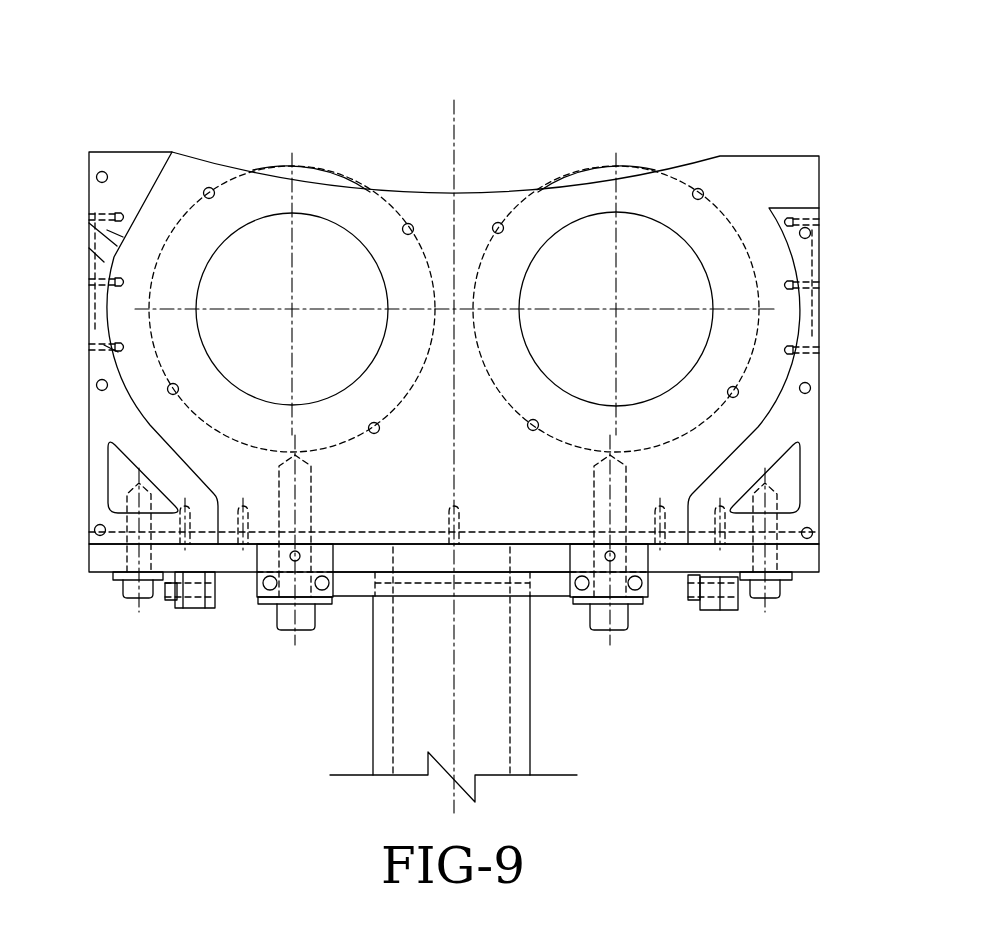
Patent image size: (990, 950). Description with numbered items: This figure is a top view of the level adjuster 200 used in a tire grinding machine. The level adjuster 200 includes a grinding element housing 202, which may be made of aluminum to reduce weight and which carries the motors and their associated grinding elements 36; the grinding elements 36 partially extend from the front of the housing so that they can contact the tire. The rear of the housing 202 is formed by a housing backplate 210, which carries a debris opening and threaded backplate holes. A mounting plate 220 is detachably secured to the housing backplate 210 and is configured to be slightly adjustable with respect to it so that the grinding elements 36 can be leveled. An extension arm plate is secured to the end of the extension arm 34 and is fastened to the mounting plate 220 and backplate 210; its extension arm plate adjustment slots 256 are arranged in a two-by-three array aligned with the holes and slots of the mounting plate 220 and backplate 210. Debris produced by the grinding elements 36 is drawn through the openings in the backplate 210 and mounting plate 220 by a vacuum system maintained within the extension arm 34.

The level adjuster 200 is at (525, 418).
The grinding element housing 202 is at (837, 170).
The grinding elements 36 is at (343, 177).
The mounting plate 220 is at (823, 557).
The housing backplate 210 is at (535, 544).
The extension arm plate adjustment slots 256 is at (240, 598).
The extension arm 34 is at (373, 717).